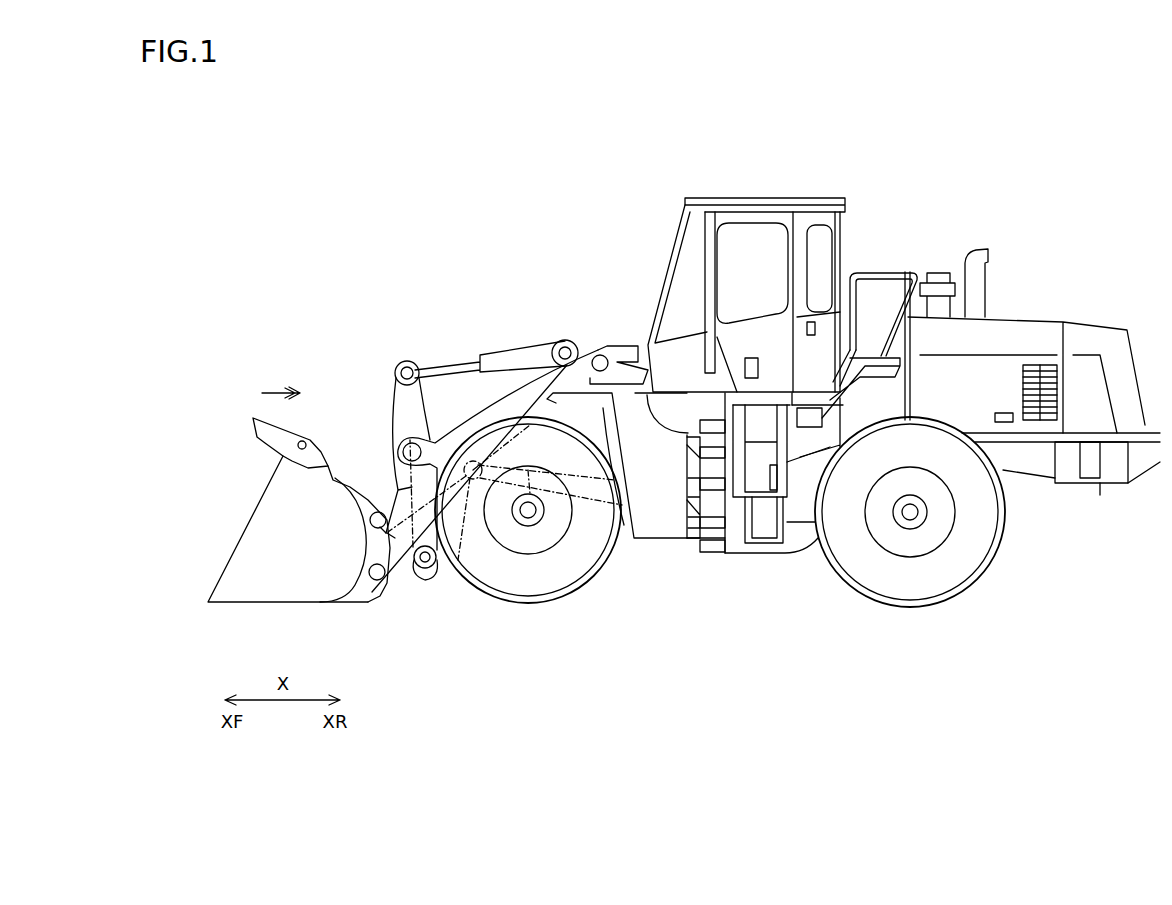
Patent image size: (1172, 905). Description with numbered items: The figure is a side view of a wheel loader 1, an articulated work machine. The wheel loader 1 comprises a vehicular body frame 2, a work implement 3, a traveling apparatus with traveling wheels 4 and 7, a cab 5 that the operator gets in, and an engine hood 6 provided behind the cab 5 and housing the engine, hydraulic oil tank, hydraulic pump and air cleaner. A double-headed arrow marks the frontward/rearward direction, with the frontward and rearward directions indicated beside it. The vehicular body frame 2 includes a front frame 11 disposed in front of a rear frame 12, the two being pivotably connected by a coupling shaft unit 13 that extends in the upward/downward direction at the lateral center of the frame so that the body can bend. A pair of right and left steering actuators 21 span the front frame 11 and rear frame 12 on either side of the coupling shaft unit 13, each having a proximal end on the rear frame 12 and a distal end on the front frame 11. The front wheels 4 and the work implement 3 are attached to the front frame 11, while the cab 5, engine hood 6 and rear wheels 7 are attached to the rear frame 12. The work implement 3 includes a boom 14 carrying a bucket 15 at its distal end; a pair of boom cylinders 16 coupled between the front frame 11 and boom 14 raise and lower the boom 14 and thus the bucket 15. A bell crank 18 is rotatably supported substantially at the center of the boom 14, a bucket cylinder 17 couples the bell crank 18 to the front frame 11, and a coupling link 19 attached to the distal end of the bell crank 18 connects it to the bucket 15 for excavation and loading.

The wheel loader 1 is at (989, 195).
The vehicular body frame 2 is at (755, 583).
The work implement 3 is at (270, 392).
The traveling wheel (front wheel) 4 is at (526, 597).
The cab 5 is at (825, 205).
The engine hood 6 is at (1043, 320).
The traveling wheel (rear wheel) 7 is at (912, 598).
The front frame 11 is at (648, 540).
The rear frame 12 is at (803, 540).
The coupling shaft unit 13 is at (707, 547).
The boom 14 is at (427, 465).
The bucket 15 is at (262, 537).
The boom cylinder 16 is at (458, 560).
The bucket cylinder 17 is at (525, 347).
The bell crank 18 is at (398, 387).
The coupling link 19 is at (413, 547).
The steering actuator 21 is at (699, 527).